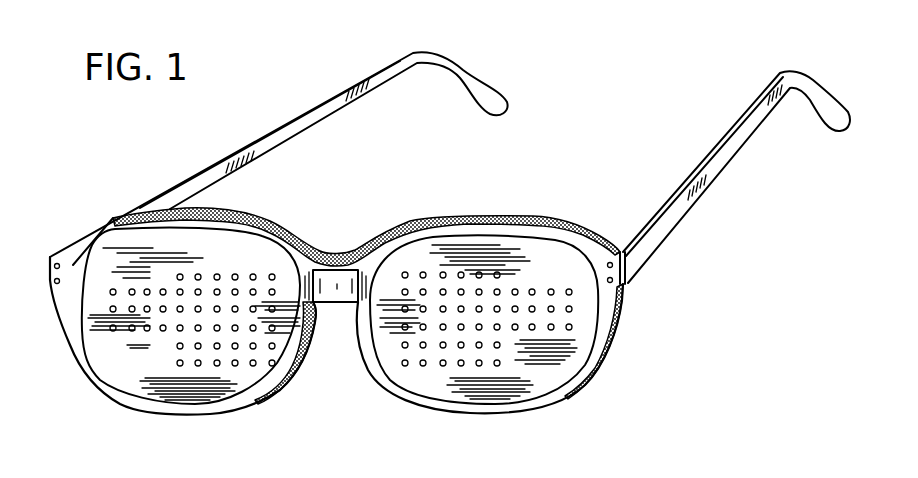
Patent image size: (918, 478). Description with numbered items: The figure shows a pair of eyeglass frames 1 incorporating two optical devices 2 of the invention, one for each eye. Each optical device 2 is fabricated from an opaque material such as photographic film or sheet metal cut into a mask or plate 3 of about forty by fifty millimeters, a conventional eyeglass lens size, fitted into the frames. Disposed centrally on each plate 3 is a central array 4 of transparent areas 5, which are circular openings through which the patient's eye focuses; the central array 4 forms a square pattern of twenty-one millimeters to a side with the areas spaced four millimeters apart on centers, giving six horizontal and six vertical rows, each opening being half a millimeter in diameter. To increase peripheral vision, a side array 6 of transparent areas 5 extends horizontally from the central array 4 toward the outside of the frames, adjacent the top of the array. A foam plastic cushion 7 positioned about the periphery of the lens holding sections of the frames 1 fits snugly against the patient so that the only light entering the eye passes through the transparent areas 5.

The eyeglass frames 1 is at (694, 252).
The optical device 2 is at (136, 367).
The mask or plate 3 is at (235, 384).
The central array 4 is at (292, 275).
The transparent areas 5 is at (214, 350).
The side array 6 is at (118, 341).
The foam plastic cushion 7 is at (238, 216).